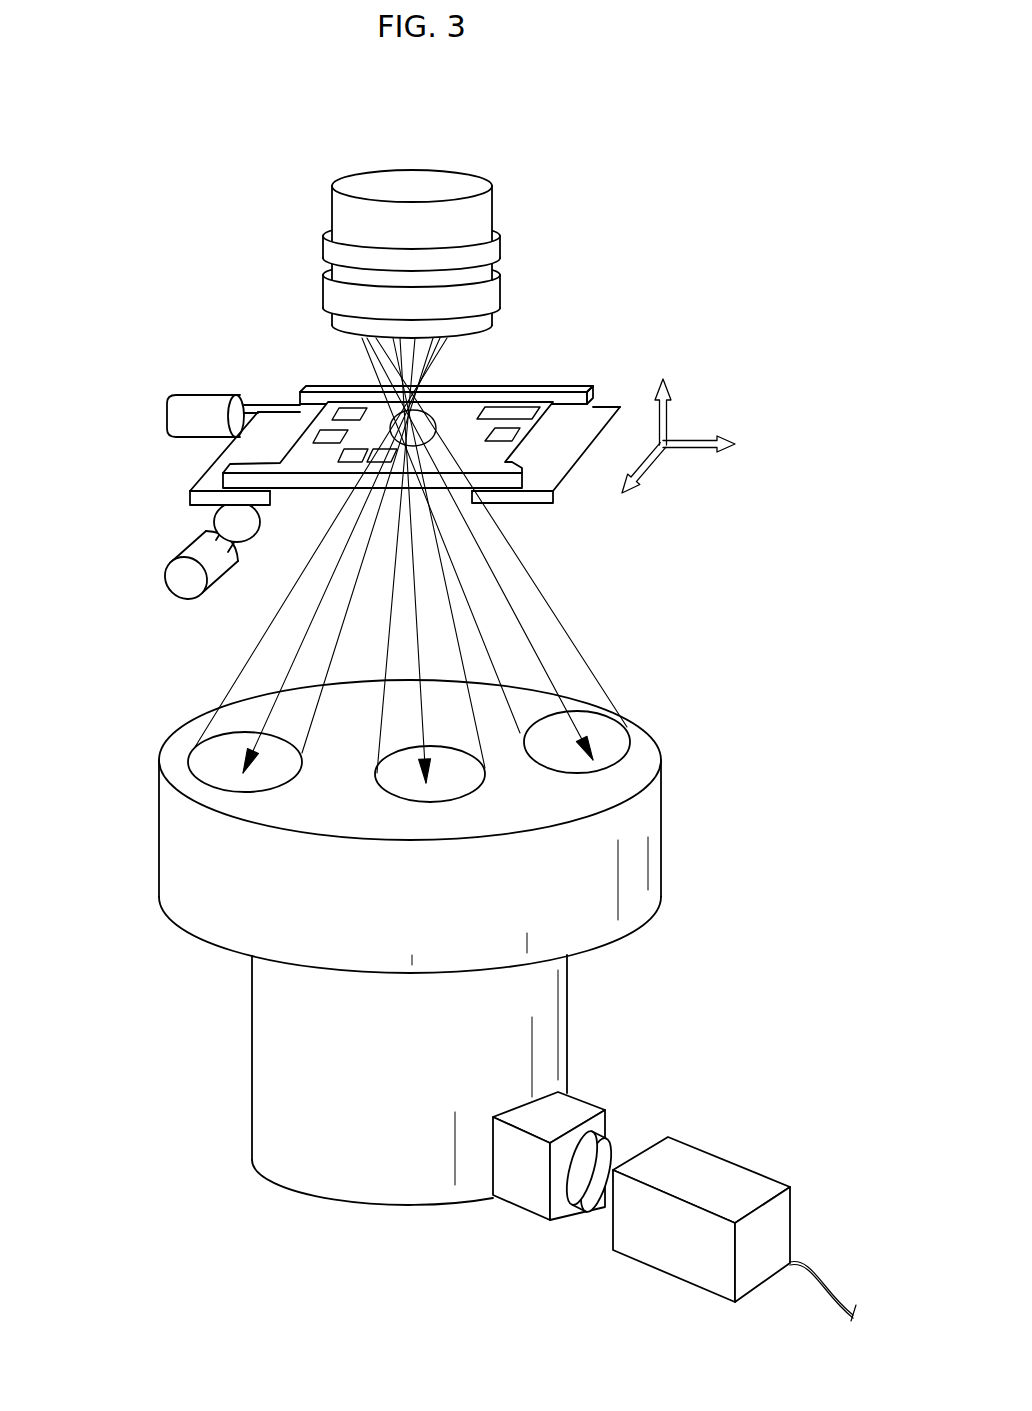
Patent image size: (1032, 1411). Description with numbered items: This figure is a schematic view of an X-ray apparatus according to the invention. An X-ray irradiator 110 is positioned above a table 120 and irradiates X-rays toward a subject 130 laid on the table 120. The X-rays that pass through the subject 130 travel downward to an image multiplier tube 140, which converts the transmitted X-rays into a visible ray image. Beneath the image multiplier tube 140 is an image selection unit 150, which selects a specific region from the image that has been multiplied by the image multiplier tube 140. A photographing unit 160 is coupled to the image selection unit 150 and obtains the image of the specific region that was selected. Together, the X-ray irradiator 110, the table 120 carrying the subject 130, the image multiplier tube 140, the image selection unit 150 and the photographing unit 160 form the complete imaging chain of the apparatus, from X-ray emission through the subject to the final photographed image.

The X-ray irradiator 110 is at (483, 211).
The table 120 is at (622, 380).
The subject 130 is at (463, 410).
The image multiplier tube 140 is at (175, 848).
The image selection unit 150 is at (265, 1060).
The photographing unit 160 is at (713, 1167).